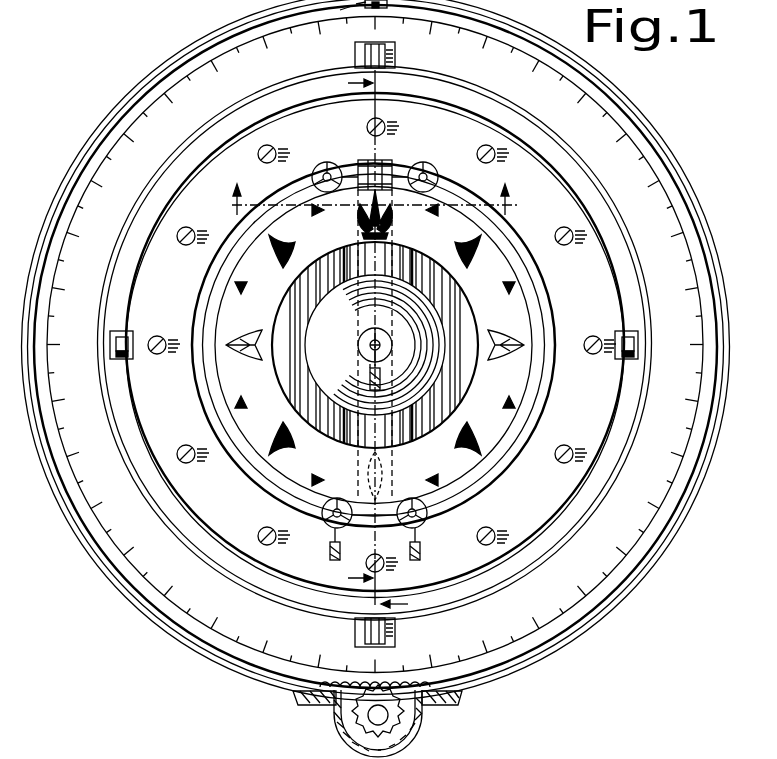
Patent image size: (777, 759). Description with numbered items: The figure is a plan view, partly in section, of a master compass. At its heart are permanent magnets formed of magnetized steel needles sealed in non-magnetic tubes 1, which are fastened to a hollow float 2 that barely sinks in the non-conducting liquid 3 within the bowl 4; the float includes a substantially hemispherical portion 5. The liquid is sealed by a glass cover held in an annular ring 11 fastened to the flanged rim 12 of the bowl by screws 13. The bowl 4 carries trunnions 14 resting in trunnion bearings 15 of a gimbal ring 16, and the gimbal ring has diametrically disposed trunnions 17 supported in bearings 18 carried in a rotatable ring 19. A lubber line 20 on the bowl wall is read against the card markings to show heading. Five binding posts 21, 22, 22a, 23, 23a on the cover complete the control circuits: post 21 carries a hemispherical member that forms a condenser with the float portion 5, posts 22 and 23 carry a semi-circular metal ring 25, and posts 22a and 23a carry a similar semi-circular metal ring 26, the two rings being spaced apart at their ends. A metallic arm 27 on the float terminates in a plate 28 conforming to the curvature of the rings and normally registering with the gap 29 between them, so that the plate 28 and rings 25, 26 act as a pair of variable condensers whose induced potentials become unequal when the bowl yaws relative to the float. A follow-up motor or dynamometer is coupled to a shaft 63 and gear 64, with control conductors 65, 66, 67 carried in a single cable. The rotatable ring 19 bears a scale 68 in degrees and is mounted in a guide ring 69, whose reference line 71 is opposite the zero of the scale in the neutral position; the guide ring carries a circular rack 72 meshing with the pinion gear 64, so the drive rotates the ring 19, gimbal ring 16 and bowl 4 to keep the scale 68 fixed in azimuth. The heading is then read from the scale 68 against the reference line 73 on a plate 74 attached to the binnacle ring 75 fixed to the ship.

The tubes 1 is at (305, 398).
The hollow float 2 is at (354, 337).
The liquid 3 is at (400, 606).
The bowl 4 is at (375, 186).
The hemispherical portion 5 is at (375, 452).
The annular ring 11 is at (542, 494).
The flanged rim 12 is at (445, 345).
The screws 13 is at (563, 445).
The trunnions 14 is at (126, 345).
The trunnion bearings 15 is at (128, 356).
The gimbal ring 16 is at (603, 498).
The trunnions 17 is at (366, 57).
The bearings 18 is at (398, 57).
The rotatable ring 19 is at (518, 606).
The lubber line 20 is at (410, 172).
The binding post 21 is at (358, 345).
The binding post 22 is at (322, 168).
The binding post 22a is at (448, 167).
The binding post 23 is at (326, 527).
The binding post 23a is at (424, 526).
The semi-circular metal ring 25 is at (328, 212).
The semi-circular metal ring 26 is at (422, 212).
The metallic arm 27 is at (360, 233).
The plate 28 is at (392, 200).
The gap 29 is at (370, 166).
The shaft 63 is at (366, 716).
The gear 64 is at (345, 738).
The conductor 65 is at (369, 380).
The conductor 66 is at (422, 556).
The conductor 67 is at (340, 548).
The scale 68 is at (650, 560).
The guide ring 69 is at (618, 608).
The reference line 71 is at (388, 5).
The circular rack 72 is at (446, 704).
The reference line 73 is at (356, 4).
The plate 74 is at (340, 10).
The binnacle ring 75 is at (178, 46).